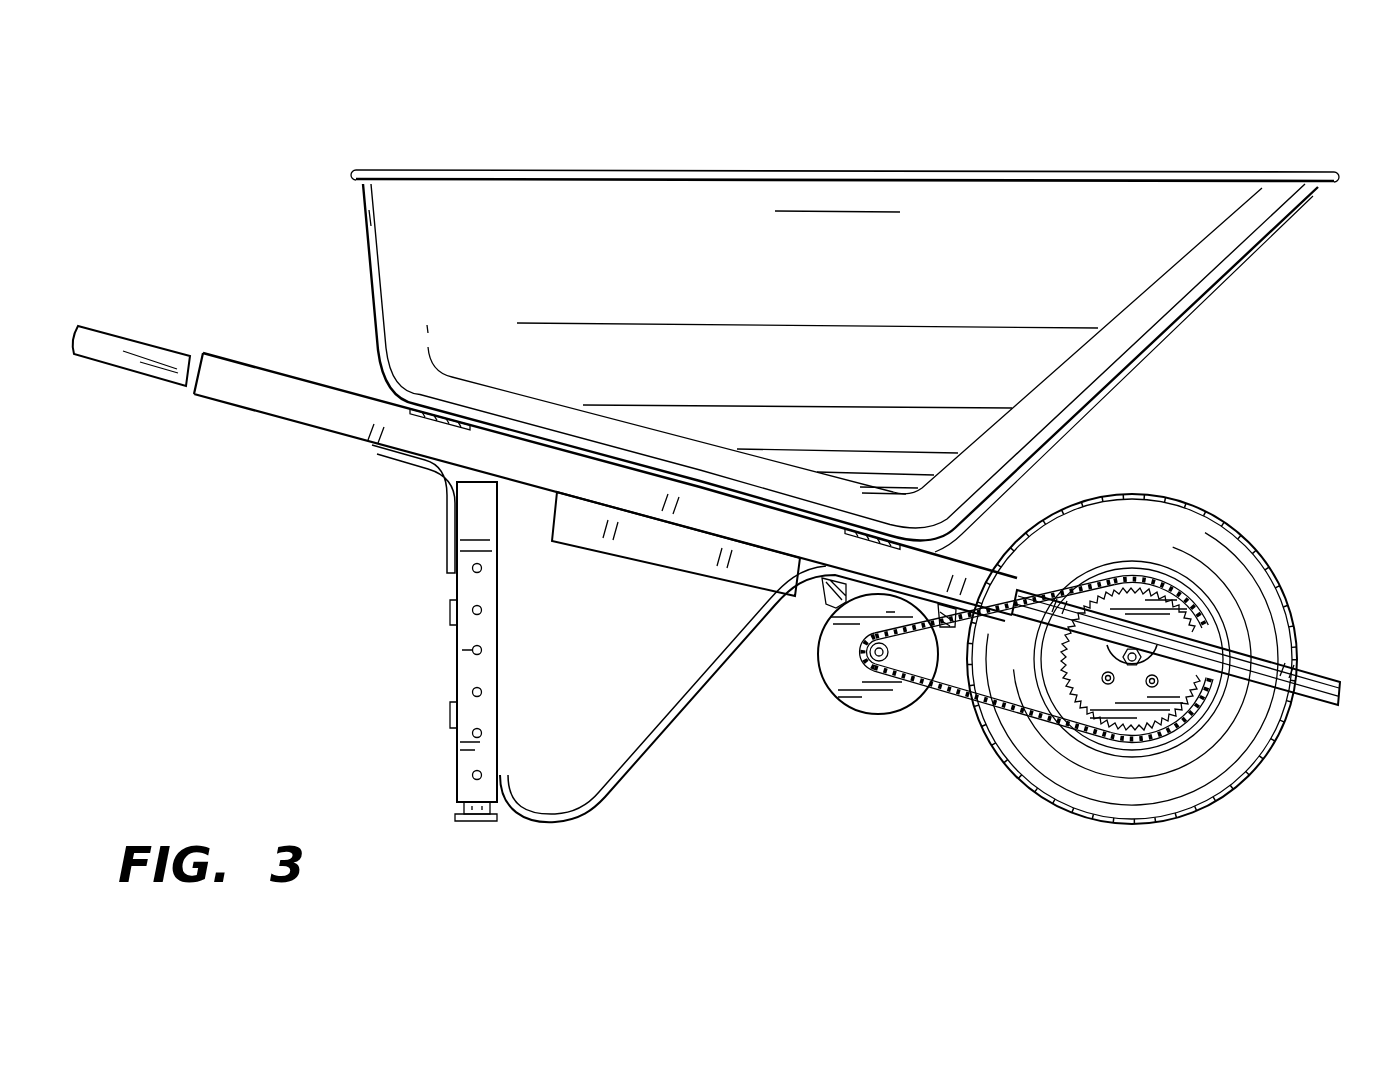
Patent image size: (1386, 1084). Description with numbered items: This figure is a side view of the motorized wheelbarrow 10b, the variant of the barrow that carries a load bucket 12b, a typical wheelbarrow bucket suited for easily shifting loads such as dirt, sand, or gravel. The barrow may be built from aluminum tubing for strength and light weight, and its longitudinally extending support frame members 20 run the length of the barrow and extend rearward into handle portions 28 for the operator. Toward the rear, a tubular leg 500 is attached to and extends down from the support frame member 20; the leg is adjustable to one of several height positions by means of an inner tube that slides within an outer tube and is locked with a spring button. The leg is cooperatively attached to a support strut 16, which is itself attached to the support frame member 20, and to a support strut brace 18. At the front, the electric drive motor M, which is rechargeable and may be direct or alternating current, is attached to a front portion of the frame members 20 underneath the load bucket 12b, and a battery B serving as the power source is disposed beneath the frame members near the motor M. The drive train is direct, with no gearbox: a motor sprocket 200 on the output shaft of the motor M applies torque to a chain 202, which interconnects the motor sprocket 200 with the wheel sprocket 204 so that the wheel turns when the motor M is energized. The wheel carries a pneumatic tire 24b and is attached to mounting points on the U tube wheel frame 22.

The wheelbarrow 10b is at (228, 156).
The load bucket 12b is at (1094, 152).
The handle portion 28 is at (133, 347).
The support frame member 20 is at (288, 413).
The support strut brace 18 is at (452, 614).
The tubular leg 500 is at (393, 738).
The support strut 16 is at (647, 758).
The battery B is at (657, 562).
The electric drive motor M is at (837, 670).
The motor sprocket 200 is at (892, 653).
The chain 202 is at (1003, 708).
The wheel sprocket 204 is at (1043, 727).
The pneumatic tire 24b is at (1073, 802).
The U tube wheel frame 22 is at (1313, 703).